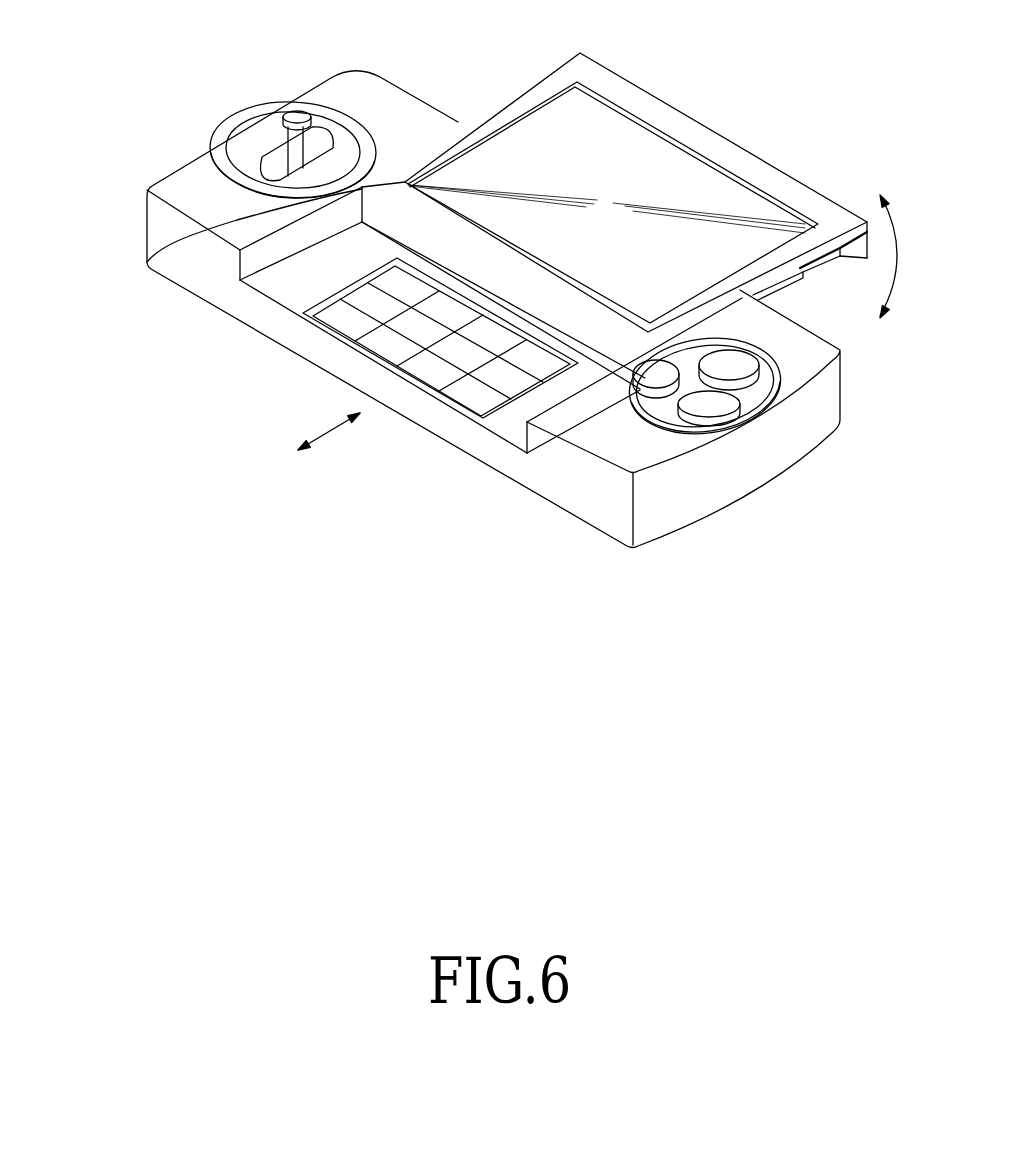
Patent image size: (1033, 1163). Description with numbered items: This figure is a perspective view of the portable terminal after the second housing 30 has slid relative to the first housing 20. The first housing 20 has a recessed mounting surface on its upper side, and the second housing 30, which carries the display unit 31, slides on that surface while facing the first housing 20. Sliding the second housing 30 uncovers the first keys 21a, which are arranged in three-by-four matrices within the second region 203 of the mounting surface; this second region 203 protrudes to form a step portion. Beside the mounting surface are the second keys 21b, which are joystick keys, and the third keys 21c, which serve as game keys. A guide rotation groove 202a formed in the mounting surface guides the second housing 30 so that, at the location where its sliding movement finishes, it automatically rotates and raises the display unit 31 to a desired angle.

The first housing 20 is at (176, 301).
The guide rotation groove 202a is at (145, 262).
The second region 203 is at (283, 287).
The first keys 21a is at (478, 402).
The second keys 21b is at (295, 116).
The third keys 21c is at (707, 408).
The second housing 30 is at (732, 138).
The display unit 31 is at (627, 140).